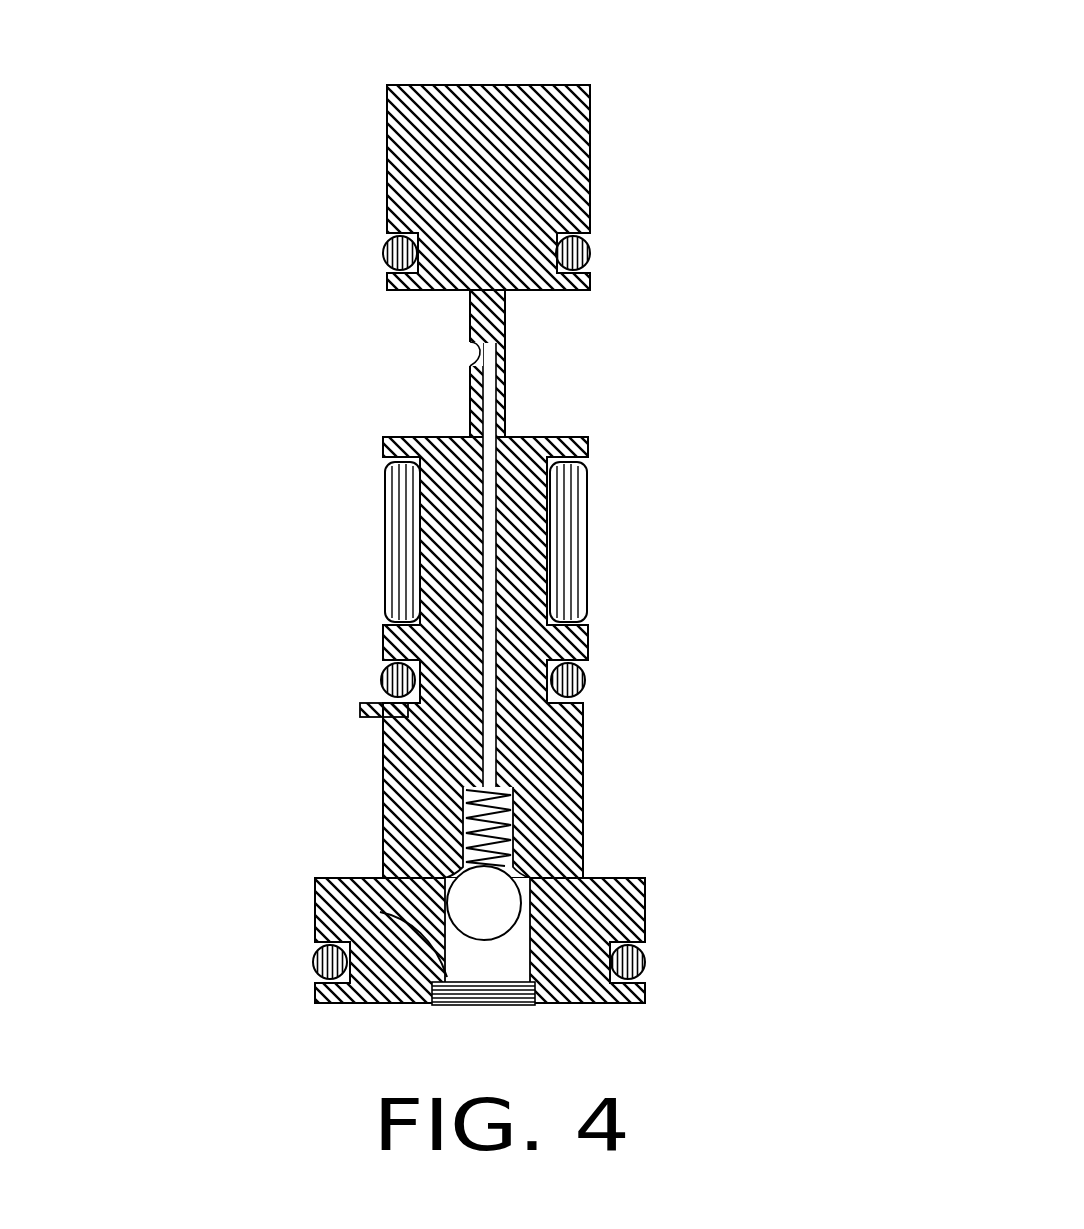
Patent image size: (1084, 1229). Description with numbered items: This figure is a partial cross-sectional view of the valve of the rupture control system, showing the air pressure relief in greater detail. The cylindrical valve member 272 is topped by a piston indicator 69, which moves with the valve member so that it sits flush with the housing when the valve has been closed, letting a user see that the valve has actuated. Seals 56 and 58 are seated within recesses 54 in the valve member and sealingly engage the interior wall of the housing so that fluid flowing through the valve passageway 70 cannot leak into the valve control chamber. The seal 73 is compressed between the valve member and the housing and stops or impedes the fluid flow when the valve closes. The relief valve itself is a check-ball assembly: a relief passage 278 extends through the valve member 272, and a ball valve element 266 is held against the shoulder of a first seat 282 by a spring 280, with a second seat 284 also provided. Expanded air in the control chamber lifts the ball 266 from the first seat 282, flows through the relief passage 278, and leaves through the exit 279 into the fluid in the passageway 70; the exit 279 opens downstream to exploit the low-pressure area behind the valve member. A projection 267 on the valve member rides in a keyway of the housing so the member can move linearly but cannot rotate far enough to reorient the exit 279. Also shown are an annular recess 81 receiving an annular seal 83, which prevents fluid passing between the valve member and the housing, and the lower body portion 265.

The piston indicator 69 is at (537, 137).
The recesses 54 is at (540, 235).
The seal 56 is at (590, 247).
The valve passageway 70 is at (533, 376).
The exit 279 is at (480, 350).
The seal 73 is at (587, 540).
The relief passage 278 is at (482, 683).
The seal 58 is at (585, 680).
The projection 267 is at (355, 705).
The valve member 272 is at (570, 775).
The spring 280 is at (505, 827).
The second seat 284 is at (475, 812).
The valve element 266 is at (495, 905).
The valve seat body 265 is at (625, 910).
The first seat 282 is at (380, 912).
The annular seal 83 is at (647, 960).
The annular recess 81 is at (630, 995).